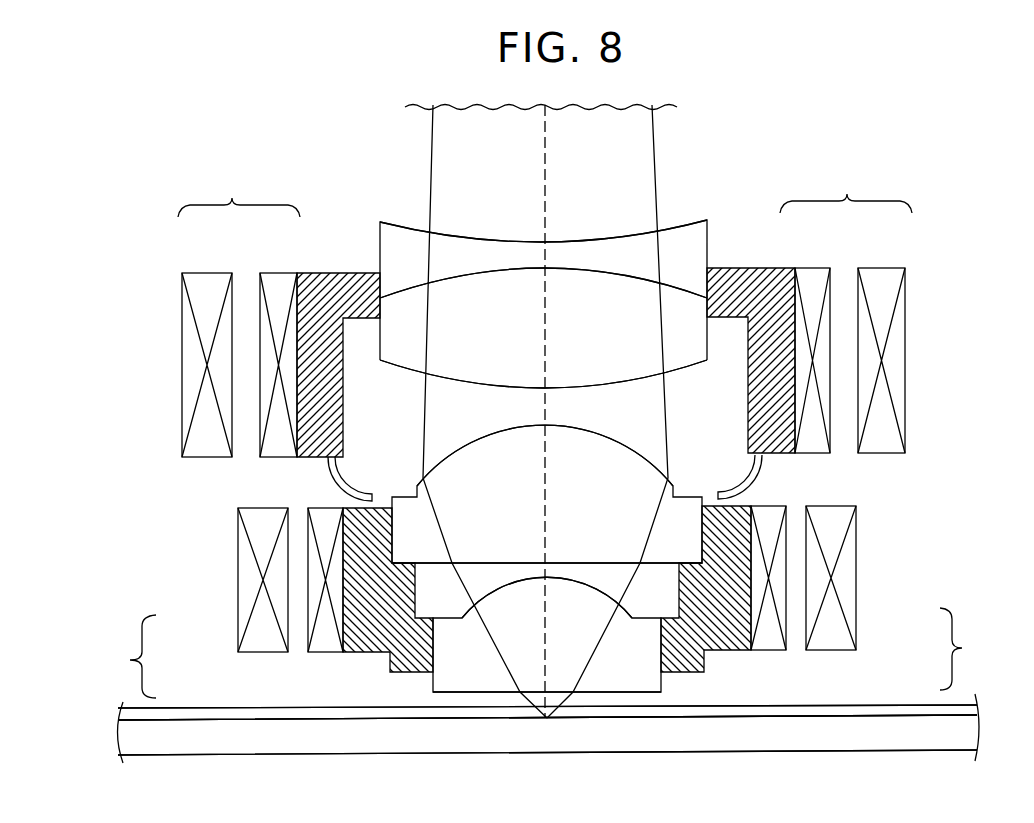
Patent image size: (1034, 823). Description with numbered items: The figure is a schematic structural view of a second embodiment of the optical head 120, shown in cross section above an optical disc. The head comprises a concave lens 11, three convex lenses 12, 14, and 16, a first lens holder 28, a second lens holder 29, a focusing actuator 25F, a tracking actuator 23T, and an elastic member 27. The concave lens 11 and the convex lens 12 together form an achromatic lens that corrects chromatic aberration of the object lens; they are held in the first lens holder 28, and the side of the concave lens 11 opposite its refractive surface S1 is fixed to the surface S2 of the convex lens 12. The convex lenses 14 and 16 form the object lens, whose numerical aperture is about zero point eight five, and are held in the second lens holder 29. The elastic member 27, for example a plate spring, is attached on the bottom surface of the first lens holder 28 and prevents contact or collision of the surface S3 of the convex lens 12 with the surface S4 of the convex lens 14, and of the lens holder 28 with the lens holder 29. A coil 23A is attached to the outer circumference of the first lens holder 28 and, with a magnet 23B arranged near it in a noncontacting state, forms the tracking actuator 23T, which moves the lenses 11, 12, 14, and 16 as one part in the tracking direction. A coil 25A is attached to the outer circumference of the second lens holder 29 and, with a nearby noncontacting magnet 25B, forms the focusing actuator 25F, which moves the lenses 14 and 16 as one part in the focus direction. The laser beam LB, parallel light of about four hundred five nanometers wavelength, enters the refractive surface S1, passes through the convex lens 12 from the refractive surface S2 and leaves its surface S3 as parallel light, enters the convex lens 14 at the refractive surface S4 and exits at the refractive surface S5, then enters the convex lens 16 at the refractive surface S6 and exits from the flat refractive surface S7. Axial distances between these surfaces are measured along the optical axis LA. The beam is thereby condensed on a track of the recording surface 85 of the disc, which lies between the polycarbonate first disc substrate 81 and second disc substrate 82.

The optical head 120 is at (812, 124).
The concave lens 11 is at (703, 221).
The convex lens 12 is at (706, 356).
The convex lens 14 is at (682, 512).
The convex lens 16 is at (664, 684).
The tracking actuator 23T is at (545, 190).
The coil 23A is at (274, 283).
The magnet 23B is at (205, 283).
The first lens holder 28 is at (335, 272).
The elastic member 27 is at (333, 487).
The second lens holder 29 is at (368, 654).
The focusing actuator 25F is at (546, 653).
The coil 25A is at (330, 642).
The magnet 25B is at (262, 628).
The recording surface 85 is at (112, 727).
The first disc substrate 81 is at (969, 707).
The second disc substrate 82 is at (969, 735).
The optical axis LA is at (552, 133).
The laser beam LB is at (655, 133).
The refractive surface S1 is at (597, 240).
The refractive surface S2 is at (613, 275).
The refractive surface S3 is at (572, 389).
The refractive surface S4 is at (574, 427).
The refractive surface S5 is at (575, 563).
The refractive surface S6 is at (577, 578).
The flat refractive surface S7 is at (628, 691).